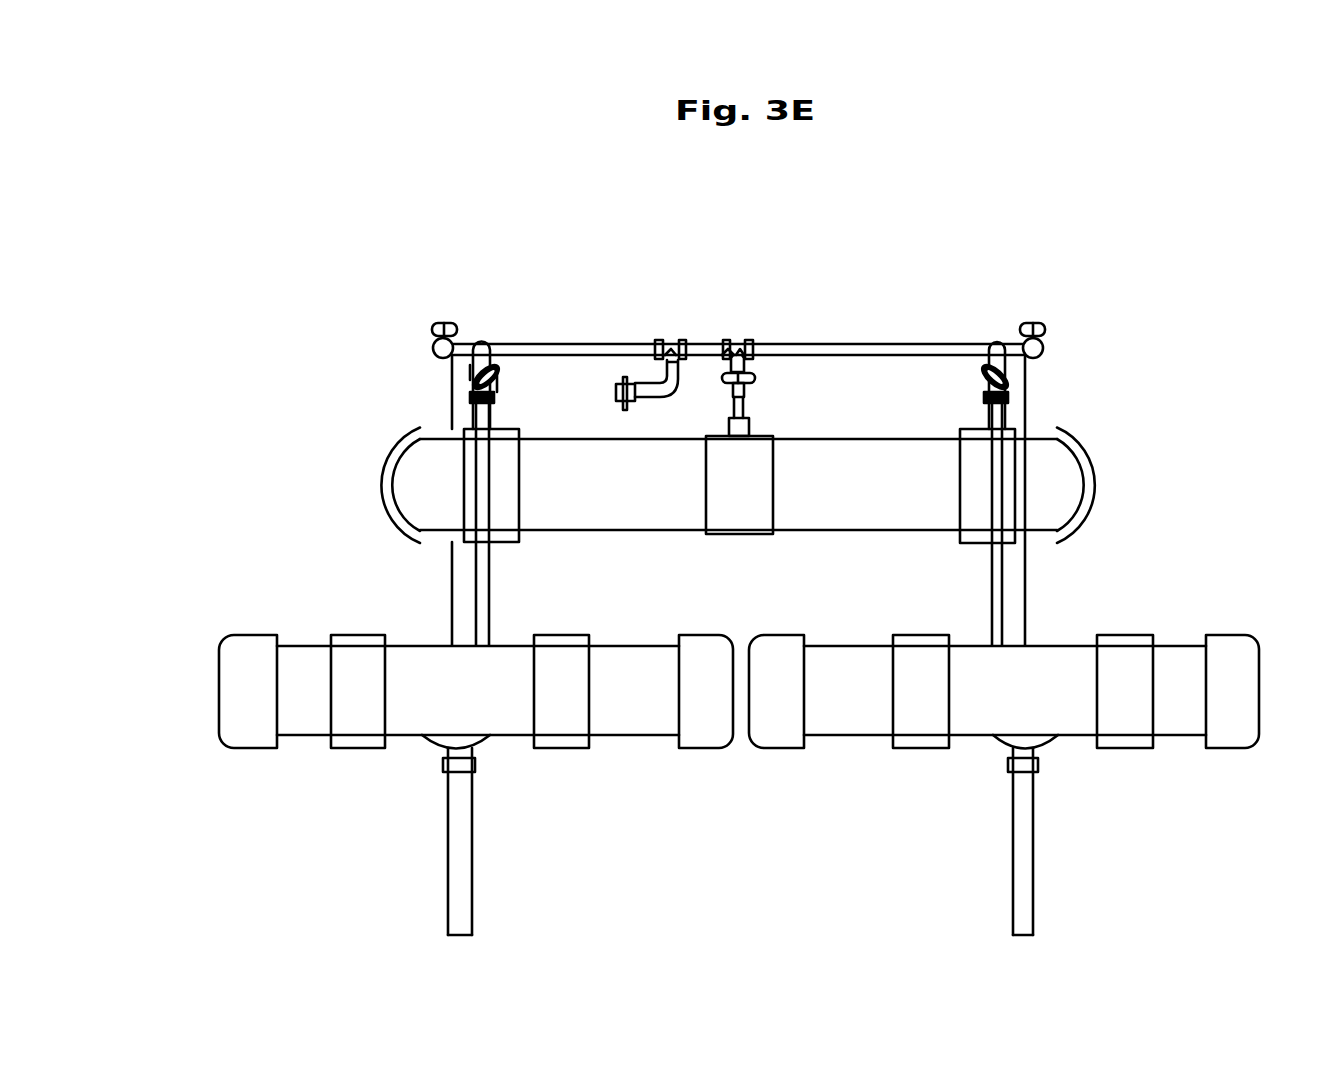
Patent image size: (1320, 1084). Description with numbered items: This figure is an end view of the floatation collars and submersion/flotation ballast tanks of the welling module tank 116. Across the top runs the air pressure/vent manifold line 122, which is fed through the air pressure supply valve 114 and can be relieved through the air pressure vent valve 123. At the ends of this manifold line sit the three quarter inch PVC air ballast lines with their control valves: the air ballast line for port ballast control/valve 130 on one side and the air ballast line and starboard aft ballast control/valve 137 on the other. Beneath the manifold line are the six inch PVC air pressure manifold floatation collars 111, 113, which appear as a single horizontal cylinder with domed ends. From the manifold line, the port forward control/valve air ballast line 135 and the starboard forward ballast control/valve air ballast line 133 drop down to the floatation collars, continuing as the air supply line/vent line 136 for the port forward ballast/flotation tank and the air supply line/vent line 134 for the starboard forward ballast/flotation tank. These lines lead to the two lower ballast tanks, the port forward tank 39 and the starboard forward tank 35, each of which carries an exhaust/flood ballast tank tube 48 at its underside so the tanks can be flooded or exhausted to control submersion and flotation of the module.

The starboard forward tank 35 is at (1014, 669).
The port forward tank 39 is at (464, 728).
The exhaust/flood ballast tank tubes 48 is at (796, 835).
The PVC air pressure manifold floatation collar 111 is at (719, 487).
The PVC air pressure manifold floatation collar 113 is at (312, 506).
The air pressure supply valve 114 is at (653, 328).
The welling module tank 116 is at (795, 500).
The air pressure/vent manifold line 122 is at (738, 292).
The air pressure vent valve 123 is at (537, 320).
The PVC air ballast line for port ballast control/valve 130 is at (368, 308).
The PVC air ballast line with starboard forward ballast control/valve 133 is at (1086, 382).
The air supply line/vent line starboard forward ballast/flotation tank 134 is at (940, 524).
The PVC air ballast line, port forward control/valve 135 is at (393, 386).
The air supply line/vent line port forward ballast/flotation tank 136 is at (542, 524).
The PVC air ballast line and starboard aft ballast control/valve 137 is at (1082, 319).